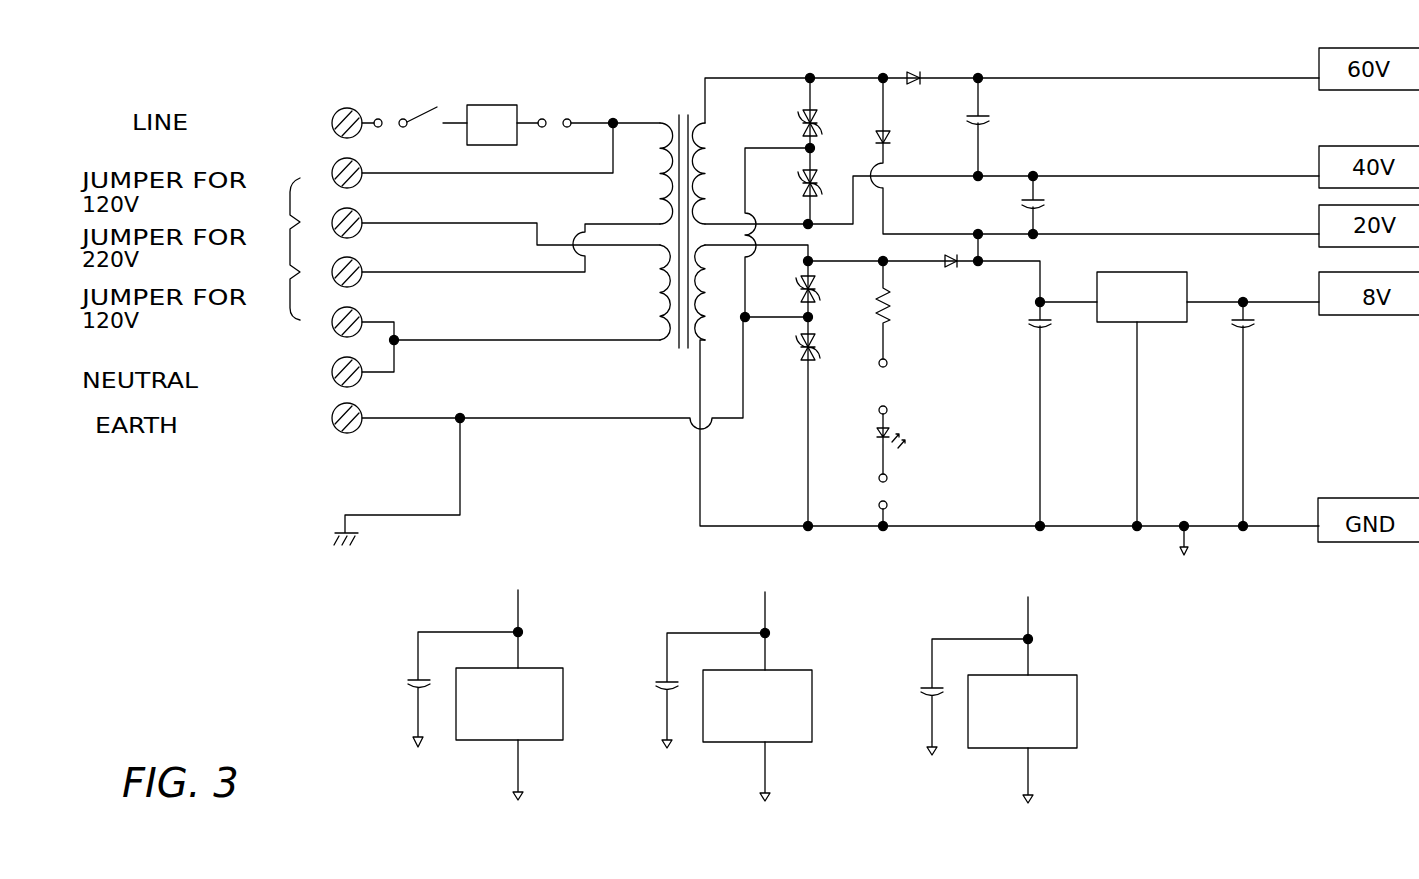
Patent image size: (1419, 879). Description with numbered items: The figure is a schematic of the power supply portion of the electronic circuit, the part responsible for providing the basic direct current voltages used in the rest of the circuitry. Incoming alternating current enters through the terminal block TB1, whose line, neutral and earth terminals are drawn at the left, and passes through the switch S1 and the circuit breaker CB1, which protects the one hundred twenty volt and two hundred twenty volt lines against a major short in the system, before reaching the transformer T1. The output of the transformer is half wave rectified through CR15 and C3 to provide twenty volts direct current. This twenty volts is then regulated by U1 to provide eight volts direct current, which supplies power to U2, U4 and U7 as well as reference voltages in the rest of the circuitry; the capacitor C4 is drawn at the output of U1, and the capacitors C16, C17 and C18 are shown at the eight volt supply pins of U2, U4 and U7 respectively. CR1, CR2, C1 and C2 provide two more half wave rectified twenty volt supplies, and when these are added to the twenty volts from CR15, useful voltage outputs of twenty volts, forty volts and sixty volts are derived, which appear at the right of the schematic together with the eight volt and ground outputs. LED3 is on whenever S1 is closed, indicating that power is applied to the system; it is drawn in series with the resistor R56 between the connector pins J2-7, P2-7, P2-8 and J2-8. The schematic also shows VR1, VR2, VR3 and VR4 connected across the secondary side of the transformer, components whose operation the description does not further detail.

The terminal block TB1 is at (336, 251).
The switch S1 is at (418, 98).
The circuit breaker CB1 is at (492, 106).
The power transformer T1 is at (685, 225).
The half wave rectifier diode CR1 is at (925, 62).
The half wave rectifier diode CR2 is at (912, 145).
The voltage regulator diode VR1 is at (834, 117).
The voltage regulator diode VR2 is at (831, 174).
The voltage regulator diode VR3 is at (831, 304).
The voltage regulator diode VR4 is at (831, 361).
The capacitor C1 is at (1035, 129).
The capacitor C2 is at (1135, 203).
The capacitor C3 is at (1070, 414).
The filter capacitor 22uF C4 is at (1263, 416).
The half wave rectifier diode CR15 is at (957, 276).
The resistor 910 ohm R56 is at (910, 310).
The connector pin J2-7 is at (910, 373).
The connector pin P2-7 is at (914, 404).
The power indicator LED LED3 is at (923, 444).
The connector pin P2-8 is at (914, 490).
The connector pin J2-8 is at (910, 535).
The voltage regulator U1 is at (1162, 389).
The integrated circuit U2 is at (509, 682).
The integrated circuit U4 is at (757, 683).
The integrated circuit U7 is at (1022, 688).
The bypass capacitor .01uF C16 is at (436, 688).
The bypass capacitor .01uF C17 is at (685, 689).
The bypass capacitor .01uF C18 is at (947, 695).